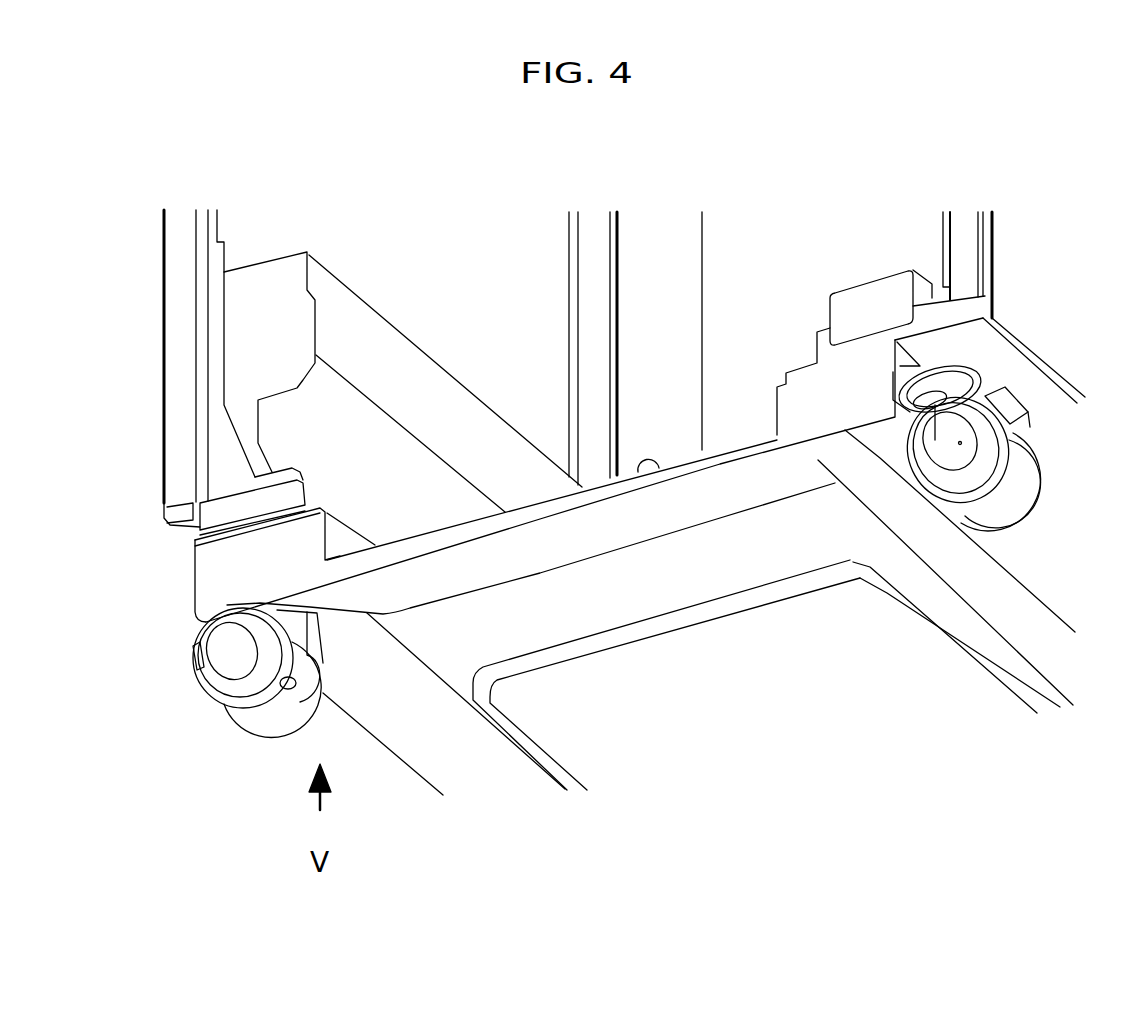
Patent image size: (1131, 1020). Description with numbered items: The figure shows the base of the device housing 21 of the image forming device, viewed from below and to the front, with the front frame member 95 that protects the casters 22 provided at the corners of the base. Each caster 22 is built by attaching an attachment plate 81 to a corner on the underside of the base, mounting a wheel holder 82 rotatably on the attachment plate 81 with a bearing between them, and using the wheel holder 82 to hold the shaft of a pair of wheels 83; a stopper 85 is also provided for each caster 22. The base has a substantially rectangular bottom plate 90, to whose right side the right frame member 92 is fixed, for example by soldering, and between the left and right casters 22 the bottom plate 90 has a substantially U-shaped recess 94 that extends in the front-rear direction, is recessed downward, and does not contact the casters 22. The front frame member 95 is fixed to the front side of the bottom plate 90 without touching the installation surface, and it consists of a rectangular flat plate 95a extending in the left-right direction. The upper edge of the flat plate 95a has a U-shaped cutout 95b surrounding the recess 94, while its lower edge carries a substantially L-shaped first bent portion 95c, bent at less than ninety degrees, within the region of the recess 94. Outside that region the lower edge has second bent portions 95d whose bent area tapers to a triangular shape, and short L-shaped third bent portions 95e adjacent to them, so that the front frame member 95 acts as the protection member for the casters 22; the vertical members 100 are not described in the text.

The device housing 21 is at (794, 252).
The caster 22 is at (210, 726).
The attachment plate 81 is at (968, 387).
The wheel holder 82 is at (933, 410).
The wheel 83 is at (960, 443).
The stopper 85 is at (1030, 412).
The bottom plate 90 is at (834, 696).
The right frame member 92 is at (873, 308).
The recess 94 is at (740, 440).
The front frame member 95 is at (569, 627).
The flat plate 95a is at (223, 588).
The U-shaped cutout 95b is at (658, 470).
The first bent portion 95c is at (535, 547).
The second bent portion 95d is at (355, 593).
The third bent portion 95e is at (185, 631).
The support column 100 is at (182, 322).